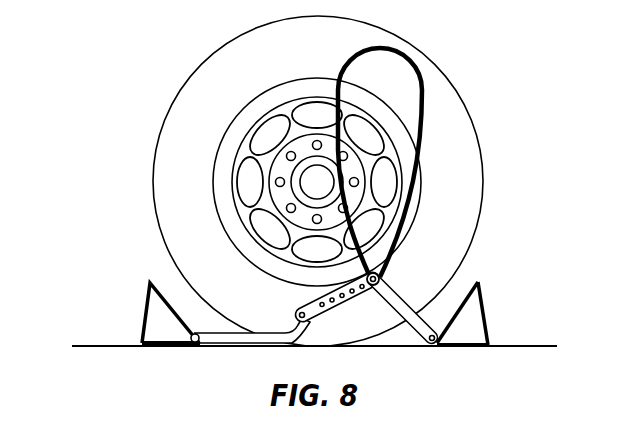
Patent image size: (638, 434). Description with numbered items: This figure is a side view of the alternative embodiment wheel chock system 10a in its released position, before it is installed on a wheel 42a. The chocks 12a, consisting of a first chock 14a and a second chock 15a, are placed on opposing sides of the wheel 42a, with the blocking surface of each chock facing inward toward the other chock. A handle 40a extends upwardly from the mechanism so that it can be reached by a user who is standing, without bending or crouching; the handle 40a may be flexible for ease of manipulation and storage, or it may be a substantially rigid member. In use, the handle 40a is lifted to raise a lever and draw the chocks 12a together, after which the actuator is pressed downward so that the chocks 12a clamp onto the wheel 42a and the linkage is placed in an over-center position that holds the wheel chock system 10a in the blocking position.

The wheel chock system 10a is at (287, 207).
The wheel 42a is at (222, 68).
The handle 40a is at (424, 94).
The first chock 14a is at (143, 313).
The chocks 12a is at (499, 309).
The second chock 15a is at (479, 326).